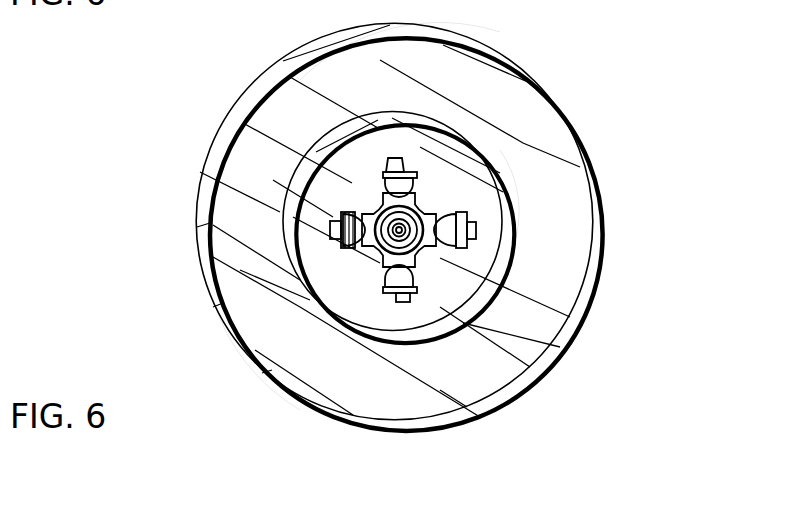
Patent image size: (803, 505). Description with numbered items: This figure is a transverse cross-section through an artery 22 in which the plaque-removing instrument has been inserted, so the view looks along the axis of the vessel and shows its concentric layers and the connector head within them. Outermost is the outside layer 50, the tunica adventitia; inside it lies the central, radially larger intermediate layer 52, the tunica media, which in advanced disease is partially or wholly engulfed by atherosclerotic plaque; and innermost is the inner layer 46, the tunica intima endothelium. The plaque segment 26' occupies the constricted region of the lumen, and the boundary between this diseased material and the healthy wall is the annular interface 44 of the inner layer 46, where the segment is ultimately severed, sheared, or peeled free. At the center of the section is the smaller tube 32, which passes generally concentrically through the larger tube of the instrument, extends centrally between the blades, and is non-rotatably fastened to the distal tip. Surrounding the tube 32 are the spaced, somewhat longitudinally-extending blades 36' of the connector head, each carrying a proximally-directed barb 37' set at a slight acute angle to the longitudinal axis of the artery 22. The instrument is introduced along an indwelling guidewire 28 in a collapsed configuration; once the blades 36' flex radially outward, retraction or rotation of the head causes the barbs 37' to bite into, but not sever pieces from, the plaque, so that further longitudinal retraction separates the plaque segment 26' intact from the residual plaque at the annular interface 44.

The artery 22 is at (220, 116).
The outside layer 50 is at (502, 57).
The intermediate layer 52 is at (430, 58).
The guidewire 28 is at (340, 300).
The inner layer 46 is at (395, 343).
The tube 32 is at (485, 185).
The plaque segment 26' is at (468, 194).
The annular interface 44 is at (500, 200).
The blades 36' is at (385, 223).
The barb 37' is at (429, 252).